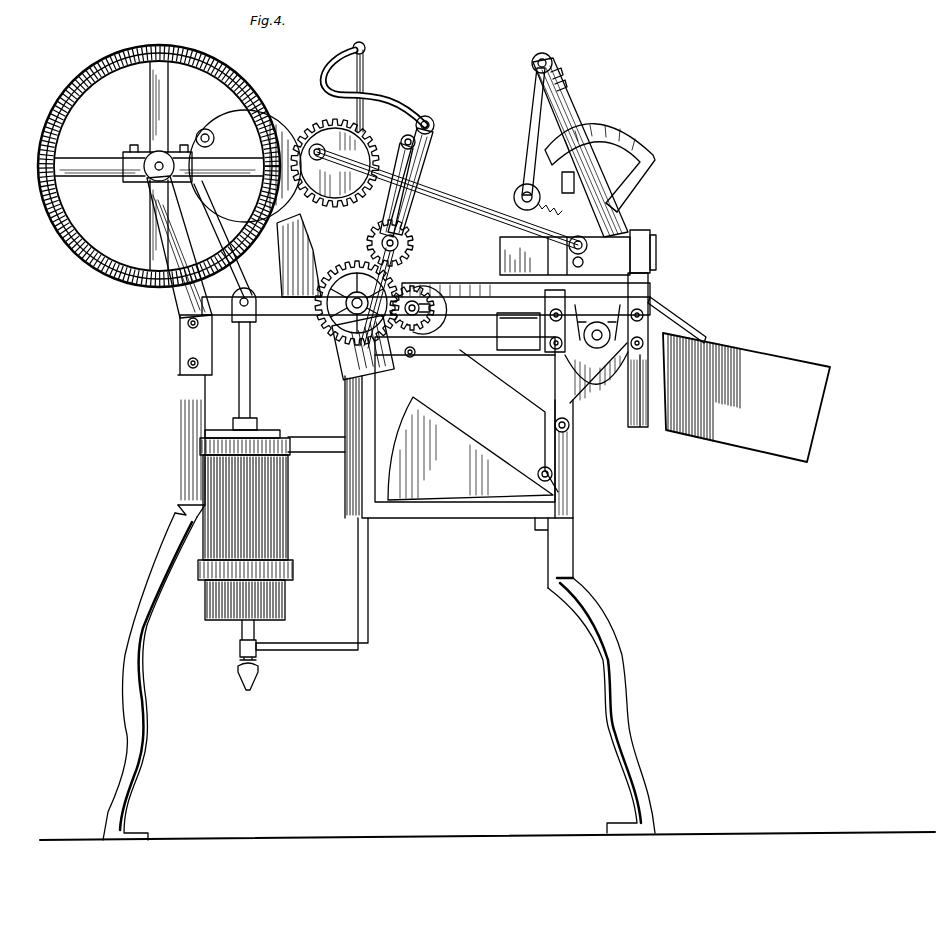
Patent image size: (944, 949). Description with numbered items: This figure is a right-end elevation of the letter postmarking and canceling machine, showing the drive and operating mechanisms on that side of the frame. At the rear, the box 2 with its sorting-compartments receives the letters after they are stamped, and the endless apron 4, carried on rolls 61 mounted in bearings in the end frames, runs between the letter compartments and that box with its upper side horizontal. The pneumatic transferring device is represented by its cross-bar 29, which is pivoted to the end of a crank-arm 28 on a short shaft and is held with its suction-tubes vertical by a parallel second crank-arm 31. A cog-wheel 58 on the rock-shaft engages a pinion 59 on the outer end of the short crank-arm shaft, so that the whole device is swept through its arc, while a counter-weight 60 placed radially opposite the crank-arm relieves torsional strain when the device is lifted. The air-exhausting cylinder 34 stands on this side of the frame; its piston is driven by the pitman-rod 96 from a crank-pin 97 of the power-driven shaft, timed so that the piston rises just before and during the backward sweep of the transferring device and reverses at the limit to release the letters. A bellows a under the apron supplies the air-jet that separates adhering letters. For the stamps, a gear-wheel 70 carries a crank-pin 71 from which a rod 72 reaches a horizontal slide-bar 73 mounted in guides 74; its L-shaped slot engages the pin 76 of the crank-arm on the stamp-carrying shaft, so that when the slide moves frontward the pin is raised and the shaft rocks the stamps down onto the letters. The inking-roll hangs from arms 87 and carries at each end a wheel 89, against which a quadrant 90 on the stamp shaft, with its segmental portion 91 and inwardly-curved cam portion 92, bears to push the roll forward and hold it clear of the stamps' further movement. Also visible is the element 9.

The box 2 is at (746, 397).
The endless apron 4 is at (426, 292).
The guide rod 9 is at (677, 320).
The crank-arm 28 is at (395, 186).
The cross-bar 29 is at (434, 128).
The second crank-arm 31 is at (420, 176).
The air-exhausting cylinder 34 is at (256, 560).
The cog-wheel 58 is at (347, 303).
The pinion 59 is at (399, 243).
The counter-weight 60 is at (363, 347).
The roll 61 is at (422, 310).
The gear-wheel 70 is at (333, 148).
The crank-pin 71 is at (335, 153).
The rod 72 is at (448, 198).
The horizontal slide-bar 73 is at (590, 251).
The guides 74 is at (643, 251).
The pin 76 is at (596, 340).
The arms 87 is at (572, 145).
The wheel 89 is at (531, 196).
The quadrant 90 is at (631, 193).
The segmental portion 91 is at (600, 162).
The cam portion 92 is at (527, 131).
The pitman-rod 96 is at (252, 359).
The crank-pin 97 is at (213, 133).
The bellows a is at (470, 448).